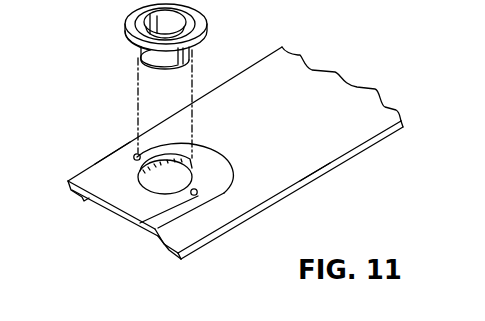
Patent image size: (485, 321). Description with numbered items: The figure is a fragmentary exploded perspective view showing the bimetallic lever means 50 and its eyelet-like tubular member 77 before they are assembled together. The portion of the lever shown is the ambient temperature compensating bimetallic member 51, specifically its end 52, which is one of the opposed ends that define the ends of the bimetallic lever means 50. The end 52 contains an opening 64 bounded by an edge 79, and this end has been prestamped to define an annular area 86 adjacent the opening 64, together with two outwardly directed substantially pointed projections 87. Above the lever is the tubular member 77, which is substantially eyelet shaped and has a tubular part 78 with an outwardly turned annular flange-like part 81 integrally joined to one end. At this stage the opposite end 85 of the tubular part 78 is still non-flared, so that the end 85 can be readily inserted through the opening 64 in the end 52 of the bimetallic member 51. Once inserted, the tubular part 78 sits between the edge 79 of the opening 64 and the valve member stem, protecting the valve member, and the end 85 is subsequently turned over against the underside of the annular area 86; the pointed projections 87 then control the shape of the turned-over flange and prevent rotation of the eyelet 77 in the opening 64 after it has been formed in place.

The bimetallic lever means 50 is at (384, 133).
The ambient temperature compensating bimetallic member 51 is at (304, 165).
The end 52 is at (104, 156).
The opening 64 is at (162, 194).
The tubular member 77 is at (208, 23).
The tubular part 78 is at (192, 53).
The edge 79 is at (186, 156).
The annular flange-like part 81 is at (127, 50).
The end 85 is at (149, 67).
The annular area 86 is at (128, 199).
The pointed projections 87 is at (134, 153).